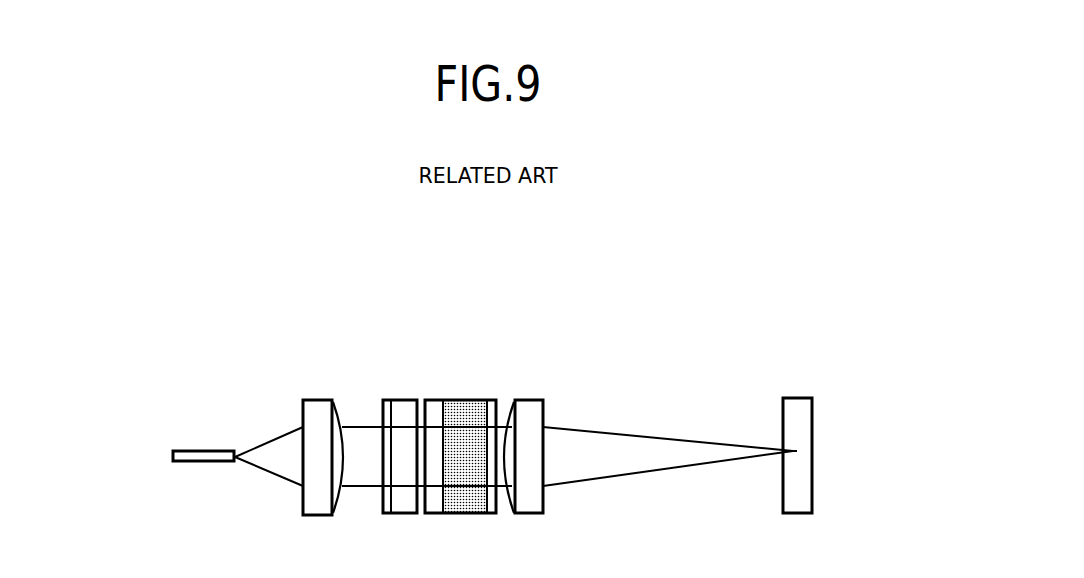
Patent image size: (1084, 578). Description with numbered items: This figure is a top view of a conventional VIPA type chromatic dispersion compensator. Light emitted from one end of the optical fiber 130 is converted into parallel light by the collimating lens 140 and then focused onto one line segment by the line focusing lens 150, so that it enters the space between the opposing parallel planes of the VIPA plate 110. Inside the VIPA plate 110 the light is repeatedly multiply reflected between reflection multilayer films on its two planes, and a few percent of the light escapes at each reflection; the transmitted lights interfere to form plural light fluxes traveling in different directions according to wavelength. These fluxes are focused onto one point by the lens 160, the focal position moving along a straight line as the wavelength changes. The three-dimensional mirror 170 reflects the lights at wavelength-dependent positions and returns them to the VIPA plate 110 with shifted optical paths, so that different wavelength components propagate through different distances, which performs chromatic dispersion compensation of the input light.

The VIPA plate 110 is at (463, 400).
The optical fiber 130 is at (202, 450).
The collimating lens 140 is at (317, 400).
The line focusing lens 150 is at (402, 400).
The lens 160 is at (528, 400).
The three-dimensional mirror 170 is at (798, 398).